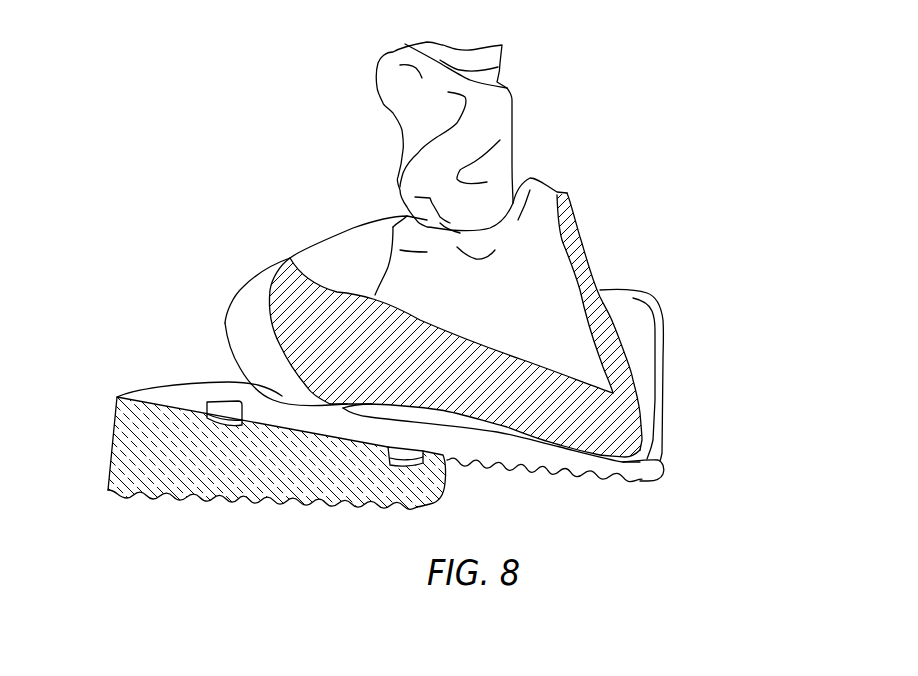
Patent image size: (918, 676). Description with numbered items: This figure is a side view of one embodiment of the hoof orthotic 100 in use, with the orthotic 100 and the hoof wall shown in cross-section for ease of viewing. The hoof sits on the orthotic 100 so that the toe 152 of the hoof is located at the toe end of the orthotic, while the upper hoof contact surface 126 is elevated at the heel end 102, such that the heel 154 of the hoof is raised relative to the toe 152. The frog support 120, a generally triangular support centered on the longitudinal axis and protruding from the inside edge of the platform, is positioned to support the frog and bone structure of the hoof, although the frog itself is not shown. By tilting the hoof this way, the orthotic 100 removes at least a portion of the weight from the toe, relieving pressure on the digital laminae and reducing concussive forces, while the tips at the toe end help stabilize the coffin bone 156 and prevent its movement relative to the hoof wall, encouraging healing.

The orthotic 100 is at (702, 274).
The heel end 102 is at (90, 395).
The frog support 120 is at (390, 446).
The upper hoof contact surface 126 is at (285, 404).
The toe 152 is at (615, 422).
The heel 154 is at (293, 333).
The coffin bone 156 is at (578, 340).